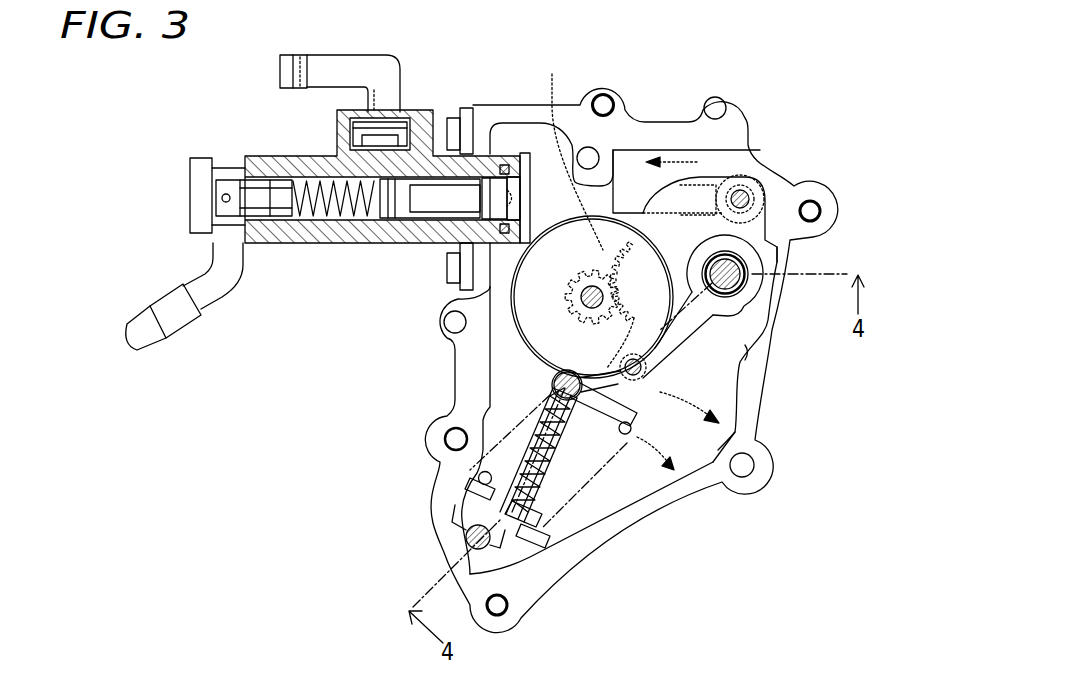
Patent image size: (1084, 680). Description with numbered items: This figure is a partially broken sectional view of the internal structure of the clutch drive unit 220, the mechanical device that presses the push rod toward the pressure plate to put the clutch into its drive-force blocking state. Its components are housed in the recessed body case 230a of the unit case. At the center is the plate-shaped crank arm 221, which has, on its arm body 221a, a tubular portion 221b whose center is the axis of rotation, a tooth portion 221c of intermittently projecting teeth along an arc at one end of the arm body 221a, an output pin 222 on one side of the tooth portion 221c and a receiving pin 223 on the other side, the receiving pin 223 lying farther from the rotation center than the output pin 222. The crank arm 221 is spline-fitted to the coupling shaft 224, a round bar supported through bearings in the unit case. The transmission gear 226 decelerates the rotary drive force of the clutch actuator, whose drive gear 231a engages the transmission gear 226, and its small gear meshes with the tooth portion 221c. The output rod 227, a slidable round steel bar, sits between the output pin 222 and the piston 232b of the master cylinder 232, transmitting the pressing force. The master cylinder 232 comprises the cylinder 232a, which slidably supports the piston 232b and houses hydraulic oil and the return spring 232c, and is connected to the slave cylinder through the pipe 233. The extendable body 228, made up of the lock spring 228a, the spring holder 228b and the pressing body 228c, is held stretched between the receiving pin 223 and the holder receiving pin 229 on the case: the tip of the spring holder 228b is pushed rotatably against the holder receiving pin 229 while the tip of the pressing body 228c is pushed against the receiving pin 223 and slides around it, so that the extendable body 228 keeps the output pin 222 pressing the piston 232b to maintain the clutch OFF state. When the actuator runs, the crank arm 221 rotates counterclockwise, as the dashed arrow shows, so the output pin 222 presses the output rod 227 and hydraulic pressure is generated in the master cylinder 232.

The clutch drive unit 220 is at (820, 40).
The crank arm 221 is at (758, 168).
The arm body 221a is at (646, 368).
The tubular portion 221b is at (750, 354).
The tooth portion 221c is at (581, 206).
The output pin 222 is at (777, 245).
The receiving pin 223 is at (662, 392).
The coupling shaft 224 is at (730, 253).
The transmission gear 226 is at (535, 354).
The output rod 227 is at (637, 180).
The extendable body 228 is at (529, 487).
The lock spring 228a is at (575, 505).
The spring holder 228b is at (478, 502).
The pressing body 228c is at (720, 448).
The holder receiving pin 229 is at (466, 540).
The body case 230a is at (521, 618).
The drive gear 231a is at (555, 382).
The master cylinder 232 is at (360, 197).
The cylinder 232a is at (262, 243).
The piston 232b is at (443, 241).
The return spring 232c is at (336, 226).
The pipe 233 is at (132, 318).